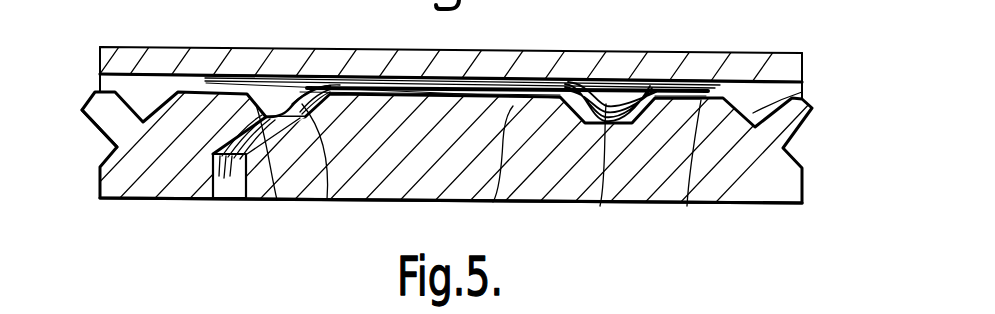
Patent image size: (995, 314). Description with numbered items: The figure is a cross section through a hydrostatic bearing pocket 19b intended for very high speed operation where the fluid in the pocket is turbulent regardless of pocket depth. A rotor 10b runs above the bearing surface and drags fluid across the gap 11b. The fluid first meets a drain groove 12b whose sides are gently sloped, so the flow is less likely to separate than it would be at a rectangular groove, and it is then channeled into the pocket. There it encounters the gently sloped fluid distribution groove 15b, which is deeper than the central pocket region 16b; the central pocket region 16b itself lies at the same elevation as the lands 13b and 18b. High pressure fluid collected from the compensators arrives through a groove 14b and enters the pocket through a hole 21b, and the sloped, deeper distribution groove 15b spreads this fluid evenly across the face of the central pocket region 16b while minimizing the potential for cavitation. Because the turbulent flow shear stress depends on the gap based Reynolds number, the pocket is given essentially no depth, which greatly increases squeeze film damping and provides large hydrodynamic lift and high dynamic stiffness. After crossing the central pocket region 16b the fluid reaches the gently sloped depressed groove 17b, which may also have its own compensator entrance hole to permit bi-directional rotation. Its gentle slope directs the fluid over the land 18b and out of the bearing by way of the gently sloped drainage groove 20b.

The rotor 10b is at (134, 55).
The gap 11b is at (108, 83).
The drain groove 12b is at (97, 124).
The land 13b is at (137, 199).
The groove 14b is at (231, 183).
The fluid distribution groove 15b is at (327, 200).
The central pocket region 16b is at (493, 202).
The depressed groove 17b is at (600, 206).
The land 18b is at (687, 206).
The pocket 19b is at (725, 223).
The drainage groove 20b is at (802, 92).
The hole 21b is at (277, 200).